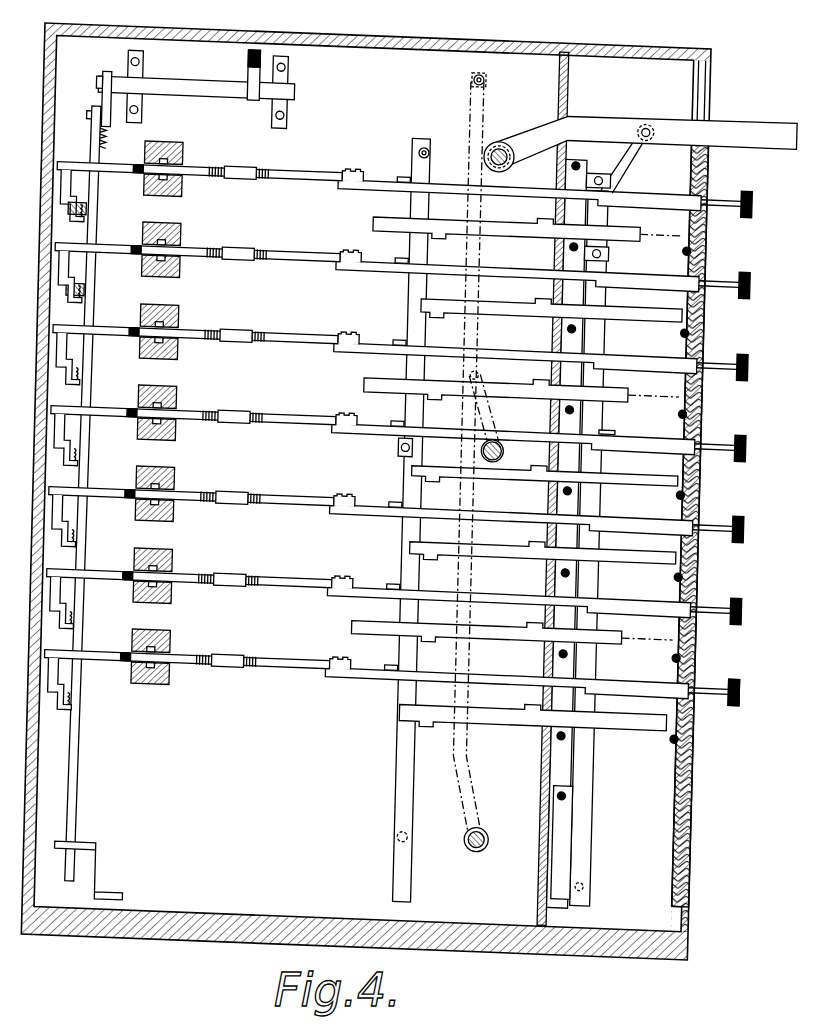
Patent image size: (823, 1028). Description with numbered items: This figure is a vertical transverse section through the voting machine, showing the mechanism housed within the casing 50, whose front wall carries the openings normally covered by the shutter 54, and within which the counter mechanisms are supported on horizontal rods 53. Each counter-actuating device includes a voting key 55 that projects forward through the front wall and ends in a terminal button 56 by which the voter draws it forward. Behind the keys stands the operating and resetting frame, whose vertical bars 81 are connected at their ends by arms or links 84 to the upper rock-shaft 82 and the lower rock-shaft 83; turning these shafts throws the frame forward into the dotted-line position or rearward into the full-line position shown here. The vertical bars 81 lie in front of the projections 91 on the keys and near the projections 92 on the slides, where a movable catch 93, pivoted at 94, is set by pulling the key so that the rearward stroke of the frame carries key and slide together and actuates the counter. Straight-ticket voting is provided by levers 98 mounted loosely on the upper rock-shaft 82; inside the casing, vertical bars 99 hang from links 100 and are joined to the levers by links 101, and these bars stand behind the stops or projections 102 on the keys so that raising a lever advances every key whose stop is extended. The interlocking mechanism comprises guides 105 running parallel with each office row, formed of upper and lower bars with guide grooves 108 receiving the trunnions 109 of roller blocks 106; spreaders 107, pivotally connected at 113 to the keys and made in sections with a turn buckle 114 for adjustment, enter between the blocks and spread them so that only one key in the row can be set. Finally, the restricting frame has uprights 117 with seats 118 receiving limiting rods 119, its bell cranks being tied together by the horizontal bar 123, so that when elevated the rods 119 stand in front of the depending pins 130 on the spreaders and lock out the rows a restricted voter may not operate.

The casing 50 is at (301, 2).
The horizontal rods 53 is at (650, 208).
The shutter 54 is at (668, 213).
The voting key 55 is at (602, 410).
The terminal button 56 is at (710, 640).
The vertical bars 81 is at (378, 706).
The upper rock-shaft 82 is at (480, 131).
The lower rock-shaft 83 is at (470, 809).
The arms or links 84 is at (463, 99).
The projections 91 is at (368, 308).
The projections 92 is at (462, 447).
The movable catch 93 is at (466, 405).
The pivot 94 is at (505, 508).
The straight-ticket levers 98 is at (576, 89).
The vertical bars 99 is at (580, 282).
The links 100 is at (540, 184).
The links 101 is at (590, 128).
The stops or projections 102 is at (637, 425).
The guides 105 is at (148, 166).
The blocks 106 is at (150, 322).
The spreaders 107 is at (282, 388).
The guide grooves 108 is at (150, 284).
The trunnions 109 is at (148, 300).
The pivotal connection 113 is at (308, 301).
The turn buckle 114 is at (220, 304).
The uprights 117 is at (58, 343).
The seats 118 is at (38, 512).
The limiting rods 119 is at (52, 192).
The horizontal bar 123 is at (146, 38).
The depending pins 130 is at (50, 258).